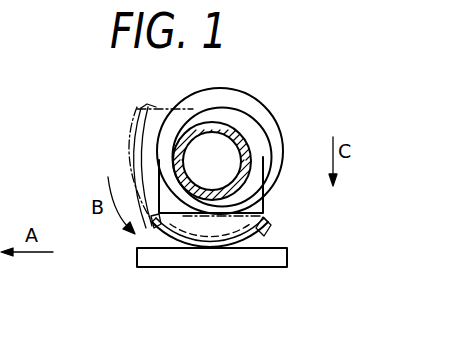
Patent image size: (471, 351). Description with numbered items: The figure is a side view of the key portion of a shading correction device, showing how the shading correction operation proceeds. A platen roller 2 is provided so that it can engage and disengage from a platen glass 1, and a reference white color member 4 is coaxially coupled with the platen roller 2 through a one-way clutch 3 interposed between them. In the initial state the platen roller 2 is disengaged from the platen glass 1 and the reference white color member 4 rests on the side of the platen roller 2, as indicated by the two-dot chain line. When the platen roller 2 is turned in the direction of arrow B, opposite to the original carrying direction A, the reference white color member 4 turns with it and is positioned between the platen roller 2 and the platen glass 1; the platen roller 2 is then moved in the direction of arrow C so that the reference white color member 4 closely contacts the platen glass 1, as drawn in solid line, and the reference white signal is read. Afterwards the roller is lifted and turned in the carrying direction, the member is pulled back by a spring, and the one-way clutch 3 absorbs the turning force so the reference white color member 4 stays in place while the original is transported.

The platen glass 1 is at (170, 258).
The platen roller 2 is at (175, 103).
The one-way clutch 3 is at (240, 128).
The reference white color member 4 is at (268, 238).